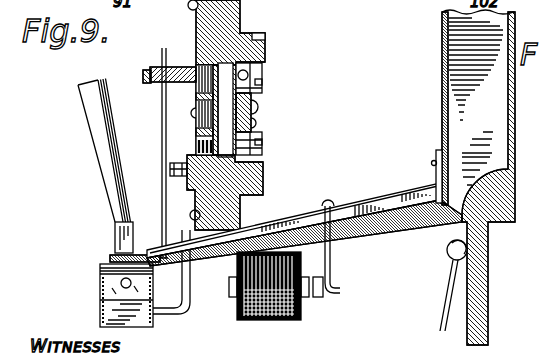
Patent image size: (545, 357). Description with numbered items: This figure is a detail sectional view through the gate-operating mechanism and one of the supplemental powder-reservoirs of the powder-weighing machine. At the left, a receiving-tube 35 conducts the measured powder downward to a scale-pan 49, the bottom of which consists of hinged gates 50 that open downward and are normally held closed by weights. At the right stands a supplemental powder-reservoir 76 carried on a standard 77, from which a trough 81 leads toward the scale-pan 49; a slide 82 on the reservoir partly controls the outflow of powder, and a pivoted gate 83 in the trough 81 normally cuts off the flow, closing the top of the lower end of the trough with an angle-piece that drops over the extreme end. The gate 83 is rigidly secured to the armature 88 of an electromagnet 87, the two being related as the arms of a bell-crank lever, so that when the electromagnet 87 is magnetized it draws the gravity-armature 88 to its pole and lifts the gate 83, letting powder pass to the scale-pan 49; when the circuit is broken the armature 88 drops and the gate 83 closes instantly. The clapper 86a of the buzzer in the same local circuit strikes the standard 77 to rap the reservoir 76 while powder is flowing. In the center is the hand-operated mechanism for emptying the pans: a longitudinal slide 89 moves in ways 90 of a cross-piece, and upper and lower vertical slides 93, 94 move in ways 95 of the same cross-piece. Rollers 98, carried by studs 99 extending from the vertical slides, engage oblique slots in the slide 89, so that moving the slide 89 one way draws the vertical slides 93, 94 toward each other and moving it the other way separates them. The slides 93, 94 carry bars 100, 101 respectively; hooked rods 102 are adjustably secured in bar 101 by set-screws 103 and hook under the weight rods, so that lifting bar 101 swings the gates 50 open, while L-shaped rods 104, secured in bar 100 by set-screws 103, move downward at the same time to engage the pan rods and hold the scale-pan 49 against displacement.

The receiving-tube 35 is at (99, 163).
The scale-pan 49 is at (100, 280).
The hinged gate 50 is at (110, 327).
The supplemental powder-reservoir 76 is at (516, 140).
The standard 77 is at (488, 306).
The trough 81 is at (387, 228).
The slide 82 is at (436, 158).
The pivoted gate 83 is at (258, 224).
The clapper 86a is at (465, 247).
The electromagnet 87 is at (271, 321).
The armature 88 is at (334, 282).
The longitudinal slide 89 is at (252, 110).
The ways 90 is at (262, 35).
The upper vertical slide 93 is at (200, 22).
The lower vertical slide 94 is at (195, 195).
The ways 95 is at (200, 96).
The roller 98 is at (245, 72).
The stud 99 is at (250, 92).
The bar 100 is at (147, 87).
The bar 101 is at (193, 131).
The hooked rod 102 is at (188, 318).
The set-screw 103 is at (146, 76).
The L-shaped rod 104 is at (162, 221).